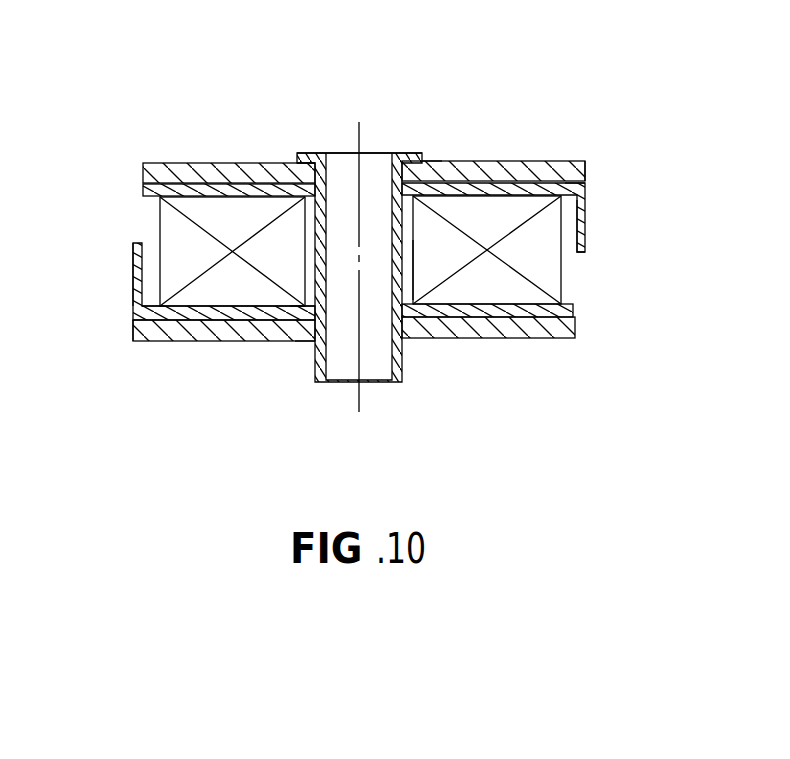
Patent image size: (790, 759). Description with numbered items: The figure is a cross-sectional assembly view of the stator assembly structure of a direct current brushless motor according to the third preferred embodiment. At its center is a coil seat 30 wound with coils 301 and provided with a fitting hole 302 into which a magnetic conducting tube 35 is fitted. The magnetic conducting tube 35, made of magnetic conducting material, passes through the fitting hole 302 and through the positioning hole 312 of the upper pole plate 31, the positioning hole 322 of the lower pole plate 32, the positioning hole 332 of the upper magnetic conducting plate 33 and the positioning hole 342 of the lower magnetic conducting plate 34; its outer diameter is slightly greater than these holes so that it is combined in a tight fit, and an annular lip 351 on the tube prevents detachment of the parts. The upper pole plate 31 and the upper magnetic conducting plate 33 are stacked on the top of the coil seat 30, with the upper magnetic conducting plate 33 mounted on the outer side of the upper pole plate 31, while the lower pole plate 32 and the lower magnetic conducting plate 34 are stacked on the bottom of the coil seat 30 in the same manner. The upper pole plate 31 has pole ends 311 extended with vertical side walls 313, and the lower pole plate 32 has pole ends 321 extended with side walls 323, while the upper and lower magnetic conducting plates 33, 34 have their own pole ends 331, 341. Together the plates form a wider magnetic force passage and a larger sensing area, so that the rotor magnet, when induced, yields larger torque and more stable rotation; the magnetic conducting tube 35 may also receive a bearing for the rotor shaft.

The coil seat 30 is at (145, 193).
The upper pole plate 31 is at (538, 161).
The pole ends 311 is at (585, 188).
The positioning hole 312 is at (293, 163).
The side walls 313 is at (585, 230).
The lower pole plate 32 is at (536, 316).
The pole ends 321 is at (133, 316).
The positioning hole 322 is at (306, 326).
The side walls 323 is at (135, 288).
The upper magnetic conducting plate 33 is at (490, 162).
The pole ends 331 is at (584, 161).
The positioning hole 332 is at (432, 160).
The lower magnetic conducting plate 34 is at (447, 320).
The pole ends 341 is at (133, 337).
The positioning hole 342 is at (307, 341).
The magnetic conducting tube 35 is at (405, 367).
The annular lip 351 is at (304, 153).
The coils 301 is at (553, 263).
The fitting hole 302 is at (412, 257).